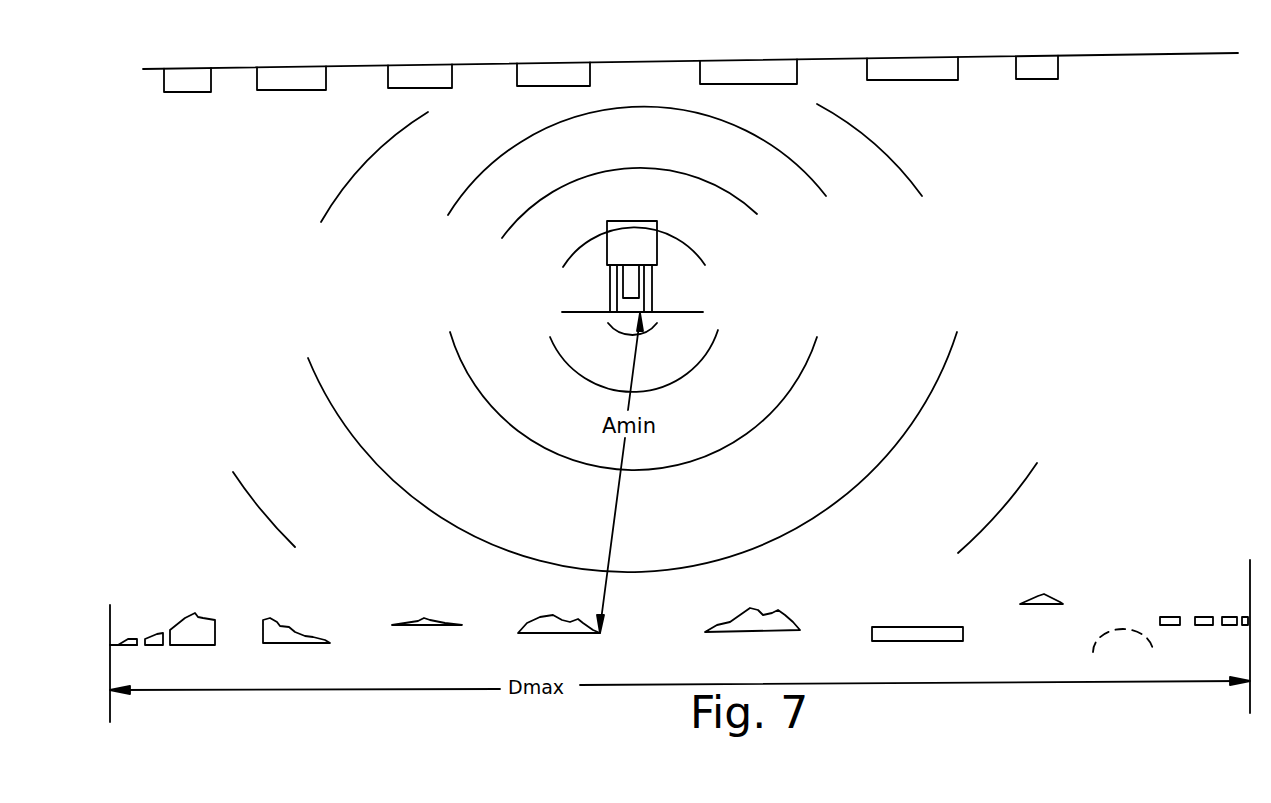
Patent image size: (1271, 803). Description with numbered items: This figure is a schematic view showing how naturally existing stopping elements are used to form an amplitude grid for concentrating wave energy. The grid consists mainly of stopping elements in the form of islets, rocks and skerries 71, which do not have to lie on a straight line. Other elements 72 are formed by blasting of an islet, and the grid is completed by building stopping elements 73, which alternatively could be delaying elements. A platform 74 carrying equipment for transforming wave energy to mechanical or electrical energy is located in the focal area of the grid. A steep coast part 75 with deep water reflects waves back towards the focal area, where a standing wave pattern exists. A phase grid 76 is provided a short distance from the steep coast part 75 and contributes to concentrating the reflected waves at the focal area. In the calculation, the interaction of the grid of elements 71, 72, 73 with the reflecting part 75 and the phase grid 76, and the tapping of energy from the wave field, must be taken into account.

The stopping elements in the form of islets, rocks and skerries 71 is at (538, 615).
The other elements formed by blasting of an islet 72 is at (260, 617).
The built stopping elements 73 is at (910, 623).
The platform 74 is at (632, 266).
The steep coast part 75 is at (1203, 60).
The phase grid 76 is at (1035, 84).